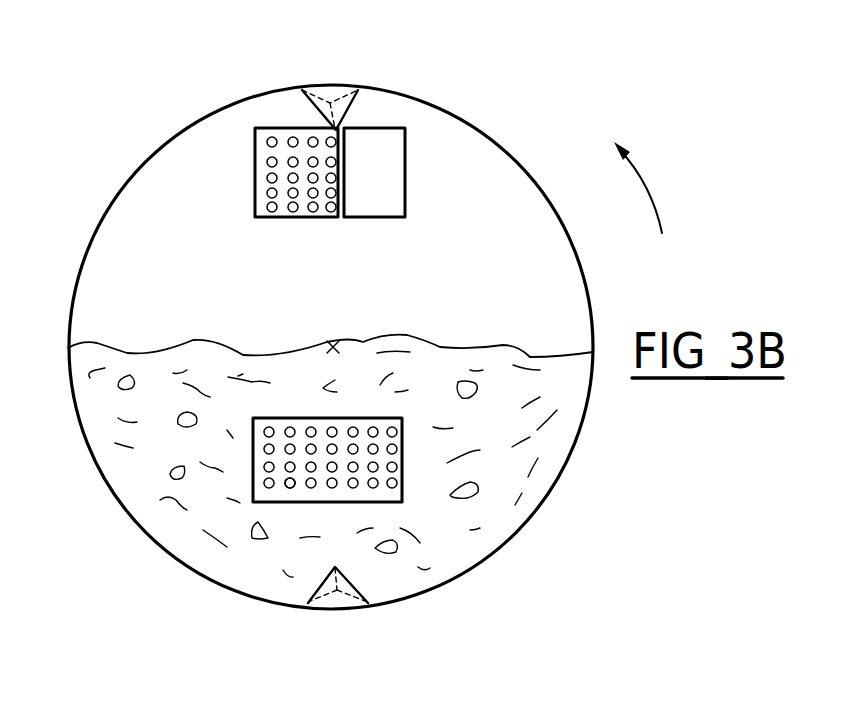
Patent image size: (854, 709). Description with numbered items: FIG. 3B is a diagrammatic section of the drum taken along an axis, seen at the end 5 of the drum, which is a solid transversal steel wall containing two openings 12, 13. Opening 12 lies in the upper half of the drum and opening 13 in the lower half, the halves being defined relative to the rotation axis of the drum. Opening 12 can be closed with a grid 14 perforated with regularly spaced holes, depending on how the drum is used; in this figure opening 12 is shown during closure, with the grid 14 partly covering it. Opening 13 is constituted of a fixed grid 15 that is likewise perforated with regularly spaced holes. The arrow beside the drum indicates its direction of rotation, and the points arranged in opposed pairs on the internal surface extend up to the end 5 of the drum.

The end 5 is at (82, 440).
The opening 12 is at (370, 128).
The opening 13 is at (403, 493).
The grid 14 is at (297, 141).
The fixed grid 15 is at (290, 486).